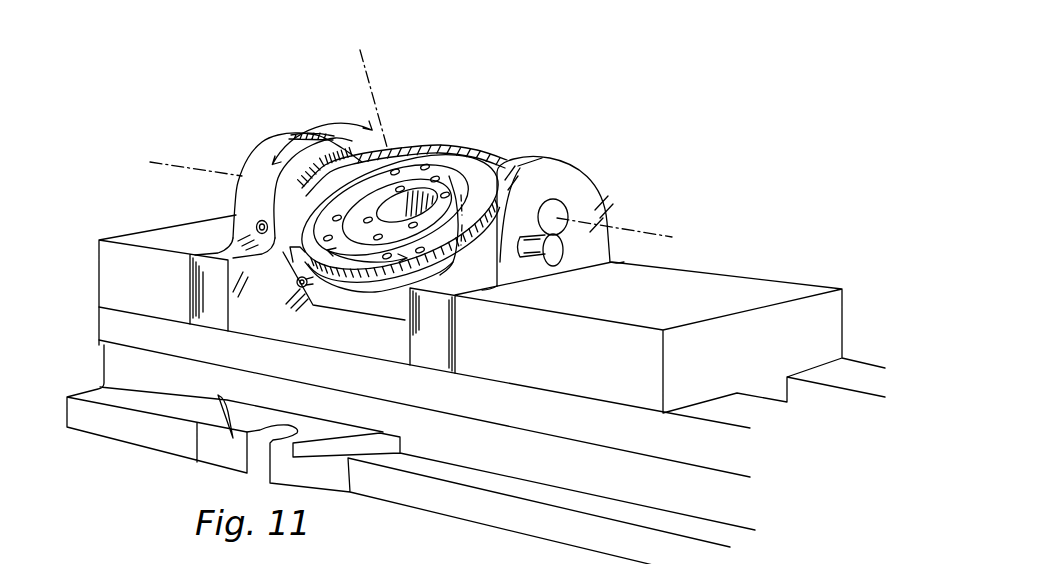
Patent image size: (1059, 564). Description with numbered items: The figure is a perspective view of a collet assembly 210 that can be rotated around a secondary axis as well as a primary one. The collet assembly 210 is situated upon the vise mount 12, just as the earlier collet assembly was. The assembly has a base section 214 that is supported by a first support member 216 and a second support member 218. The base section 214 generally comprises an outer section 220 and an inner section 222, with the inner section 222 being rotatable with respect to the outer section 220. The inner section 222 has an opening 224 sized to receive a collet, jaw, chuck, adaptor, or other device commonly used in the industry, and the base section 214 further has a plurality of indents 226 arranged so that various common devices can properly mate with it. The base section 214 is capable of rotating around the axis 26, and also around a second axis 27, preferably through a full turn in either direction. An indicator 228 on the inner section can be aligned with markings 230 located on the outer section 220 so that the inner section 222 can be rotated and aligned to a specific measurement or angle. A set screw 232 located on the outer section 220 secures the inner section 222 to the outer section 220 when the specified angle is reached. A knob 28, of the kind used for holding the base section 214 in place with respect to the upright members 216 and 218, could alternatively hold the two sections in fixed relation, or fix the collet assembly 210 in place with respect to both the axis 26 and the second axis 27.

The vise mount 12 is at (143, 370).
The collet assembly 210 is at (238, 95).
The second axis 27 is at (366, 67).
The axis 26 is at (250, 197).
The second support member 218 is at (260, 154).
The indicator 228 is at (322, 163).
The indents 226 is at (402, 187).
The opening 224 is at (430, 190).
The inner section 222 is at (452, 176).
The base section 214 is at (493, 150).
The first support member 216 is at (578, 170).
The knob 28 is at (553, 263).
The set screw 232 is at (302, 288).
The markings 230 is at (353, 285).
The outer section 220 is at (393, 330).